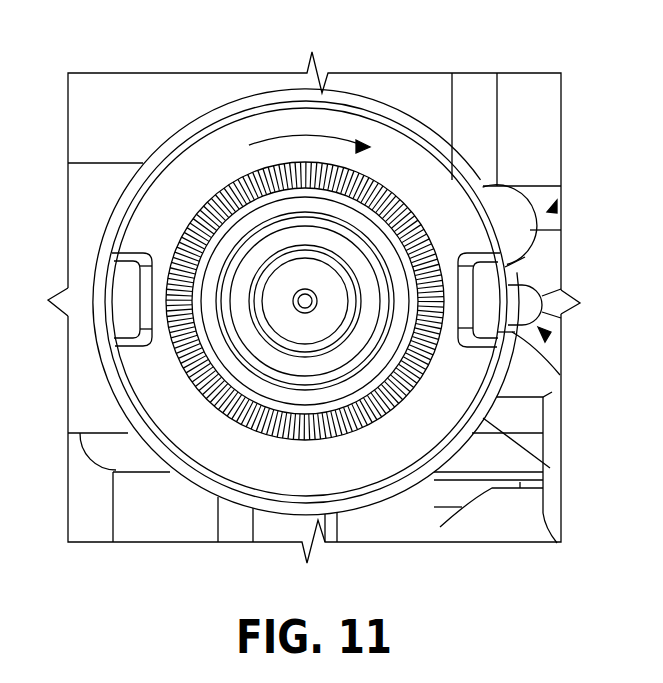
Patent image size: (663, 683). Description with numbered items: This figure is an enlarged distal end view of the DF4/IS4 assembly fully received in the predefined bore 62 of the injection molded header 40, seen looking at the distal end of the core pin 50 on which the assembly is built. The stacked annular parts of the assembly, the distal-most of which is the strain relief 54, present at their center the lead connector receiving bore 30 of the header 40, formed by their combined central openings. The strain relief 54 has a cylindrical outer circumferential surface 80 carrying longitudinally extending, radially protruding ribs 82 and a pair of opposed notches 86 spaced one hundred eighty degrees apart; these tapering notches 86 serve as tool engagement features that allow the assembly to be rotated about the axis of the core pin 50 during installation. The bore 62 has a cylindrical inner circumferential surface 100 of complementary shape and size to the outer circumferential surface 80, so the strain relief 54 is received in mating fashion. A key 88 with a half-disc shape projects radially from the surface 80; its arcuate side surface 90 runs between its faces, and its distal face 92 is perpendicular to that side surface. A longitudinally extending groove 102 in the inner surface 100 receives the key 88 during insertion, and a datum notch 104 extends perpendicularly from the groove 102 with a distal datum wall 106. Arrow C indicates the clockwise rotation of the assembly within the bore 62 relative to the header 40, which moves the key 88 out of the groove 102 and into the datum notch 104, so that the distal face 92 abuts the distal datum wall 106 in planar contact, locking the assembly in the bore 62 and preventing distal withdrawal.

The lead connector receiving bore 30 is at (186, 385).
The injection molded header 40 is at (80, 93).
The core pin 50 is at (273, 212).
The strain relief 54 is at (154, 163).
The predefined bore 62 is at (142, 452).
The outer circumferential surface 80 is at (338, 105).
The ribs 82 is at (128, 185).
The notches 86 is at (115, 288).
The key 88 is at (569, 351).
The side surface 90 is at (542, 292).
The distal face 92 is at (523, 256).
The inner circumferential surface 100 is at (550, 468).
The groove 102 is at (518, 187).
The datum notch 104 is at (584, 188).
The distal datum wall 106 is at (550, 235).
The arrow C is at (307, 132).